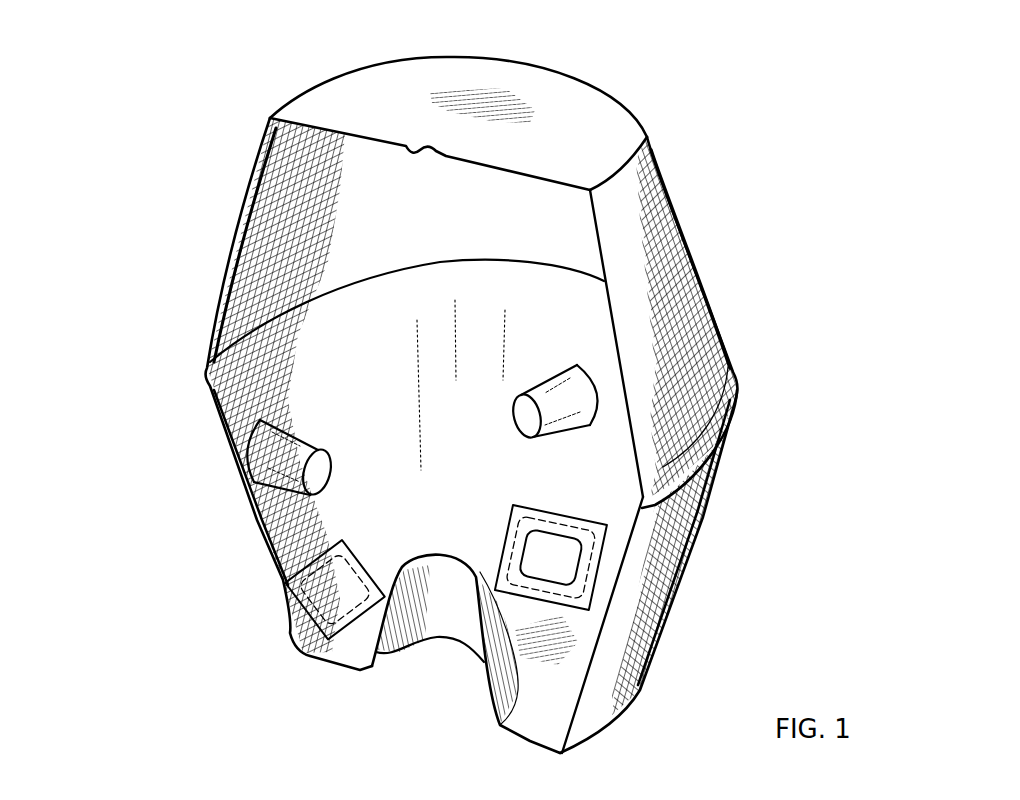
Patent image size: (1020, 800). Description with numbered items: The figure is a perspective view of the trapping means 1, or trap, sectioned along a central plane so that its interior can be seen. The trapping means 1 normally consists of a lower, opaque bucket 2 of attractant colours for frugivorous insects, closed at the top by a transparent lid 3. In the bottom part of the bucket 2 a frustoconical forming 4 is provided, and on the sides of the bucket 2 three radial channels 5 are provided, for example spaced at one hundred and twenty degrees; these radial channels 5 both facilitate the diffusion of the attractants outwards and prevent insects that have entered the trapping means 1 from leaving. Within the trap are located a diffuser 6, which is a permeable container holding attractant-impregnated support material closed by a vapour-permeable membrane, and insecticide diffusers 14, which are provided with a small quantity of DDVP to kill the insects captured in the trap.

The trapping means 1 is at (648, 102).
The lower opaque bucket 2 is at (630, 600).
The transparent lid 3 is at (623, 265).
The frustoconical forming 4 is at (445, 595).
The radial channels 5 is at (292, 460).
The diffuser 6 is at (593, 532).
The insecticide diffusers 14 is at (303, 598).